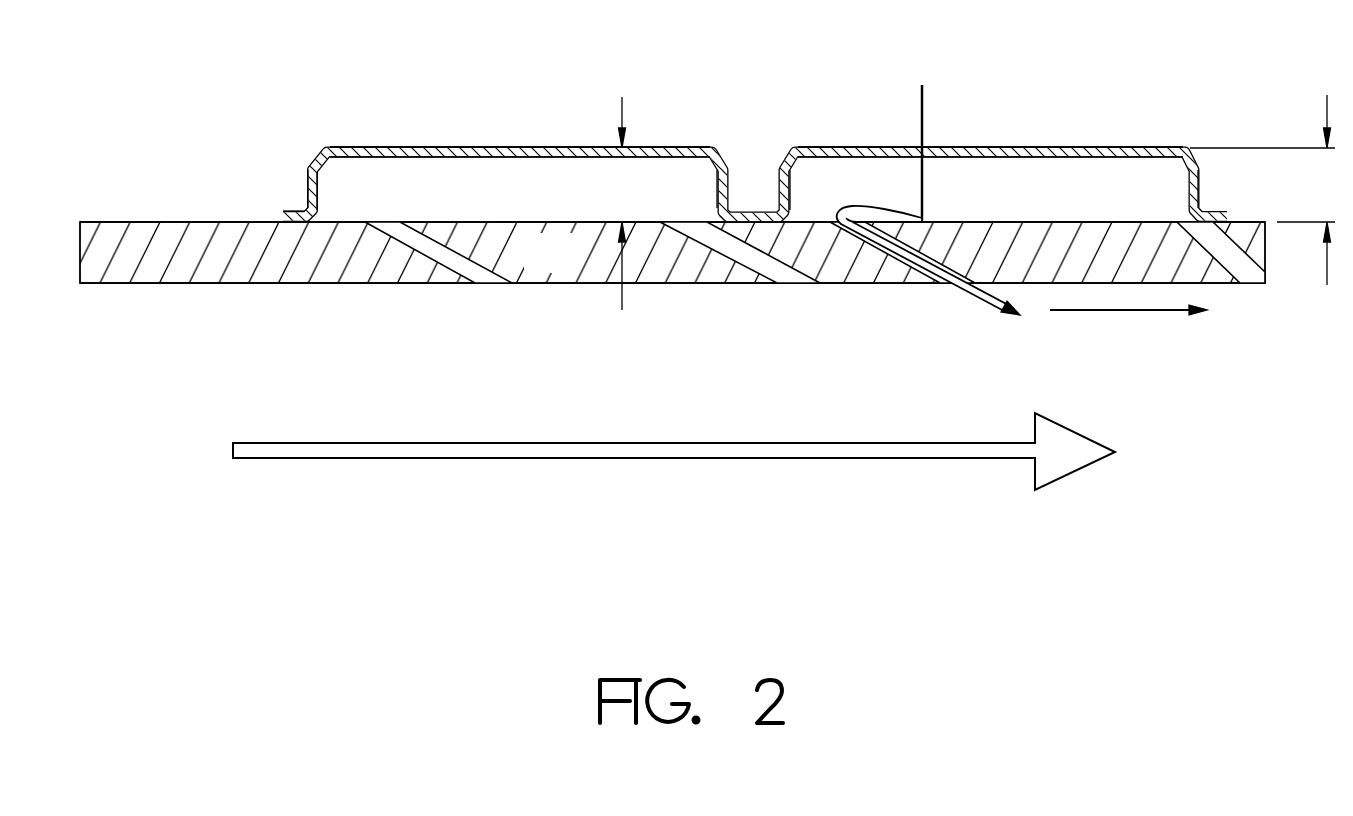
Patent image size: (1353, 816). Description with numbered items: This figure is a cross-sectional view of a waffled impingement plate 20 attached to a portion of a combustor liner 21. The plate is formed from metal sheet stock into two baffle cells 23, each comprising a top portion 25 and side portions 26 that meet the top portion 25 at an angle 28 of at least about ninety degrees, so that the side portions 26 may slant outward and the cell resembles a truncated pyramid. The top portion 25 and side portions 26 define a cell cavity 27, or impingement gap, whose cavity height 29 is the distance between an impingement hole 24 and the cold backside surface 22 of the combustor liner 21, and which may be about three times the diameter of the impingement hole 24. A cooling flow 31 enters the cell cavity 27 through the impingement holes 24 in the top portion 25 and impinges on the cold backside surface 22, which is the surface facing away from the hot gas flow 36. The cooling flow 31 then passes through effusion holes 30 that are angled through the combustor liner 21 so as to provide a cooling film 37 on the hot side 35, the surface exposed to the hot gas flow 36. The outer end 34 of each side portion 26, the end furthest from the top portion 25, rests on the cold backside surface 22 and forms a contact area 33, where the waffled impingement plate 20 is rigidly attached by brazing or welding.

The waffled impingement plate 20 is at (1330, 95).
The combustor liner 21 is at (528, 268).
The cold backside surface 22 is at (142, 222).
The baffle cell 23 is at (339, 126).
The impingement hole 24 is at (583, 147).
The top portion 25 is at (382, 147).
The side portion 26 is at (307, 172).
The cell cavity 27 is at (445, 205).
The angle 28 is at (339, 196).
The cavity height 29 is at (623, 112).
The effusion hole 30 is at (514, 318).
The cooling flow 31 is at (921, 100).
The contact area 33 is at (293, 224).
The outer end 34 is at (306, 208).
The hot side 35 is at (122, 284).
The hot gas flow 36 is at (592, 458).
The cooling film 37 is at (1133, 313).